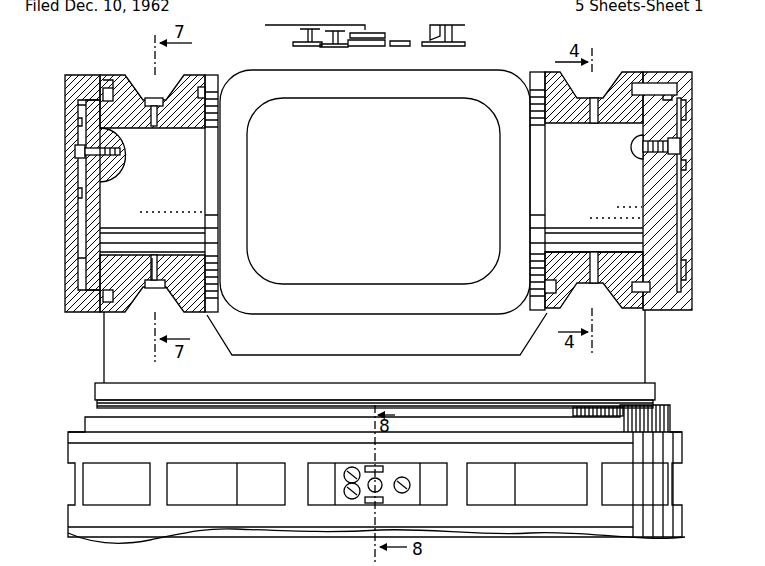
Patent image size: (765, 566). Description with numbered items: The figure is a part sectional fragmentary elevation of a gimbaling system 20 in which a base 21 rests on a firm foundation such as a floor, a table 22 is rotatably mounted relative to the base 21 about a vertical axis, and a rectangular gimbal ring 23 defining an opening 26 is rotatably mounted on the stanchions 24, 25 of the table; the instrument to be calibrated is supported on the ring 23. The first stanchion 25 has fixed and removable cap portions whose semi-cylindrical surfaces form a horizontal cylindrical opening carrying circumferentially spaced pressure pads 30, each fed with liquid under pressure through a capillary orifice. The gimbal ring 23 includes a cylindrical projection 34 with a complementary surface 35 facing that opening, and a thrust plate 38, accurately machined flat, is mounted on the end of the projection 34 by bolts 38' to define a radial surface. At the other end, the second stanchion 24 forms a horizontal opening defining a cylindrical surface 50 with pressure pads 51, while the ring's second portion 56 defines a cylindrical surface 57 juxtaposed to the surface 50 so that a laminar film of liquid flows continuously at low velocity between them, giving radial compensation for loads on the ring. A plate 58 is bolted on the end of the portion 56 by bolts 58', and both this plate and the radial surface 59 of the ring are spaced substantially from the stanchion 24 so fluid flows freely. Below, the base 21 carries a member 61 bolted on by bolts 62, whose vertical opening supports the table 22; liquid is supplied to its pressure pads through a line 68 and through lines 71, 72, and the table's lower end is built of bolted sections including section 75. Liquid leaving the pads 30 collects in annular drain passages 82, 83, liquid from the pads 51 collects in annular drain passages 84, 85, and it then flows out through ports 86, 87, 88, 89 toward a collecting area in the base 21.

The gimbaling system 20 is at (668, 382).
The base 21 is at (682, 452).
The table 22 is at (115, 353).
The gimbal ring 23 is at (488, 76).
The second stanchion 24 is at (213, 335).
The first stanchion 25 is at (632, 343).
The opening 26 is at (497, 247).
The pressure pads 30 is at (596, 124).
The cylindrical projection 34 is at (613, 182).
The complementary surface 35 is at (608, 212).
The thrust plate 38 is at (691, 191).
The bolts 38' is at (687, 149).
The cylindrical surface 50 is at (176, 131).
The pressure pads 51 is at (155, 257).
The second portion 56 is at (83, 178).
The cylindrical surface 57 is at (173, 192).
The plate 58 is at (74, 195).
The bolts 58' is at (69, 156).
The radial surface 59 is at (222, 112).
The member 61 is at (430, 457).
The bolts 62 is at (318, 507).
The line 68 is at (372, 492).
The line 71 is at (367, 470).
The line 72 is at (382, 505).
The section 75 is at (607, 528).
The annular drain passage 82 is at (546, 83).
The annular drain passage 83 is at (651, 87).
The annular drain passage 84 is at (111, 78).
The annular drain passage 85 is at (200, 97).
The port 86 is at (558, 294).
The port 87 is at (627, 293).
The port 88 is at (112, 298).
The port 89 is at (182, 298).